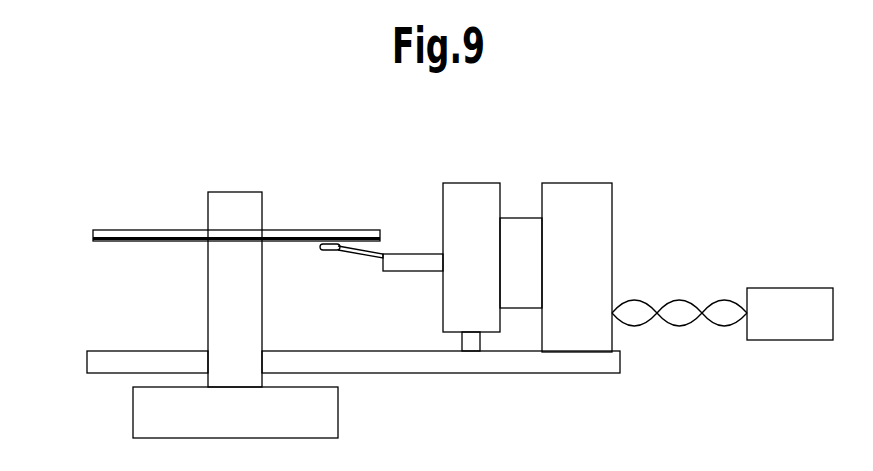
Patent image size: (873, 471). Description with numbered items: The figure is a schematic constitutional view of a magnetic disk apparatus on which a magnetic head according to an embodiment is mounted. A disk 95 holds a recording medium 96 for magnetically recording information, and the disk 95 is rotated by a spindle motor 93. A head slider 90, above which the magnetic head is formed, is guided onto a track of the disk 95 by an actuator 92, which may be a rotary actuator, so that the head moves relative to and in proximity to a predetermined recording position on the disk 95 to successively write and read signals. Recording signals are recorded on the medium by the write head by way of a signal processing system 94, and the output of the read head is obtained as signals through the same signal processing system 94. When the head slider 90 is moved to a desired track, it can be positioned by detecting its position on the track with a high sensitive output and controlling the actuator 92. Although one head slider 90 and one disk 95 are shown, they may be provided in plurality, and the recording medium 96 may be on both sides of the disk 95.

The head slider 90 is at (333, 238).
The actuator 92 is at (475, 190).
The spindle motor 93 is at (339, 414).
The signal processing system 94 is at (793, 297).
The disk 95 is at (94, 233).
The recording medium 96 is at (106, 239).